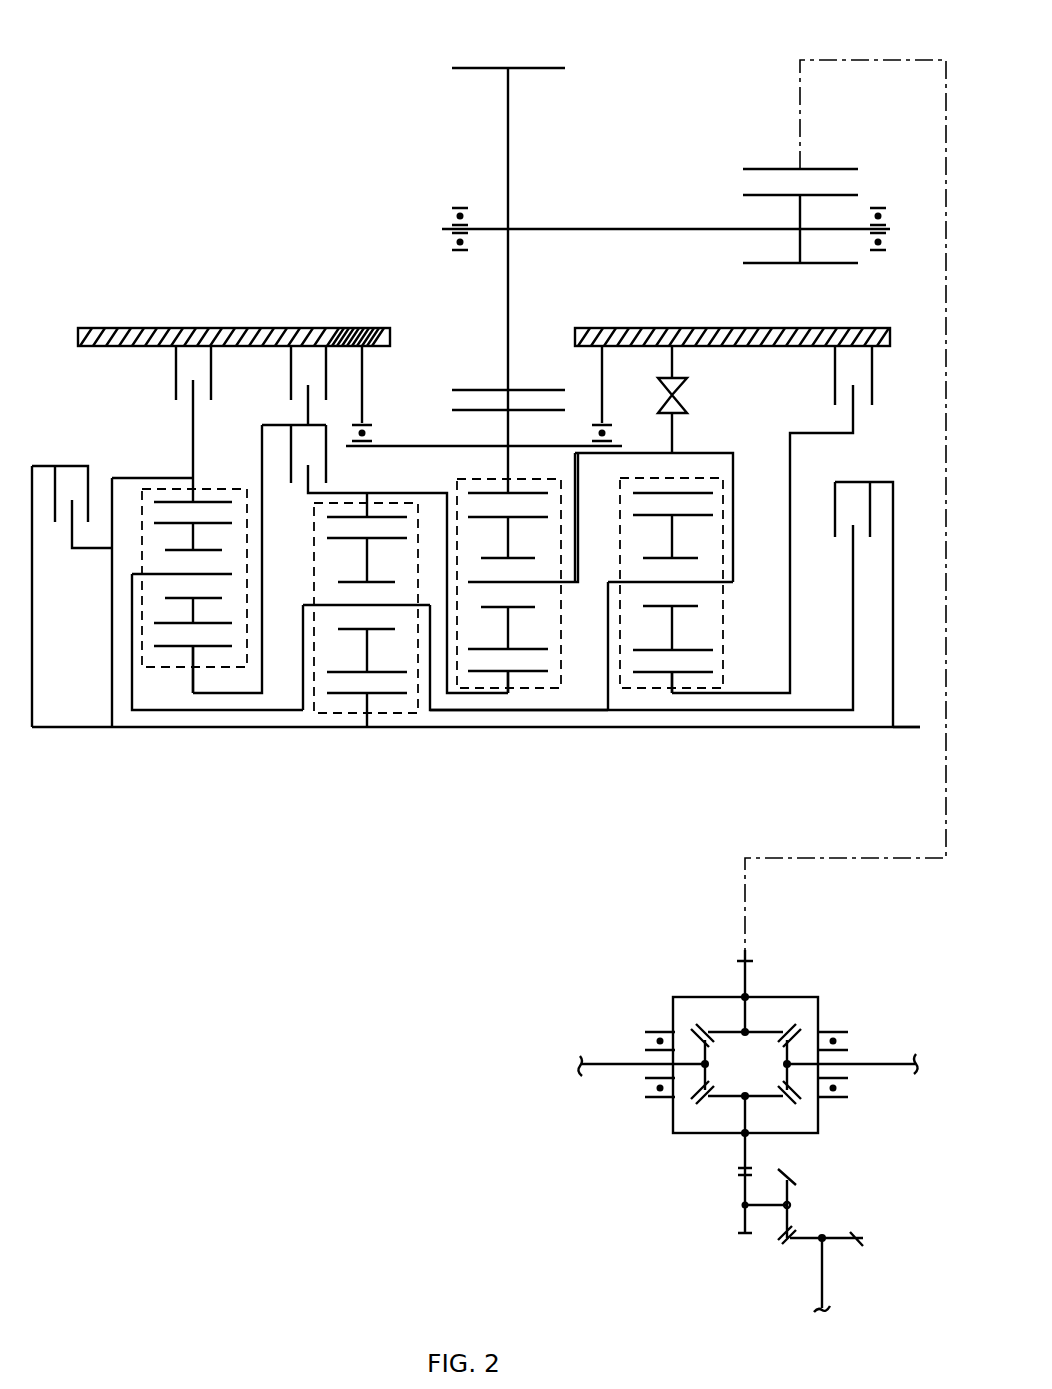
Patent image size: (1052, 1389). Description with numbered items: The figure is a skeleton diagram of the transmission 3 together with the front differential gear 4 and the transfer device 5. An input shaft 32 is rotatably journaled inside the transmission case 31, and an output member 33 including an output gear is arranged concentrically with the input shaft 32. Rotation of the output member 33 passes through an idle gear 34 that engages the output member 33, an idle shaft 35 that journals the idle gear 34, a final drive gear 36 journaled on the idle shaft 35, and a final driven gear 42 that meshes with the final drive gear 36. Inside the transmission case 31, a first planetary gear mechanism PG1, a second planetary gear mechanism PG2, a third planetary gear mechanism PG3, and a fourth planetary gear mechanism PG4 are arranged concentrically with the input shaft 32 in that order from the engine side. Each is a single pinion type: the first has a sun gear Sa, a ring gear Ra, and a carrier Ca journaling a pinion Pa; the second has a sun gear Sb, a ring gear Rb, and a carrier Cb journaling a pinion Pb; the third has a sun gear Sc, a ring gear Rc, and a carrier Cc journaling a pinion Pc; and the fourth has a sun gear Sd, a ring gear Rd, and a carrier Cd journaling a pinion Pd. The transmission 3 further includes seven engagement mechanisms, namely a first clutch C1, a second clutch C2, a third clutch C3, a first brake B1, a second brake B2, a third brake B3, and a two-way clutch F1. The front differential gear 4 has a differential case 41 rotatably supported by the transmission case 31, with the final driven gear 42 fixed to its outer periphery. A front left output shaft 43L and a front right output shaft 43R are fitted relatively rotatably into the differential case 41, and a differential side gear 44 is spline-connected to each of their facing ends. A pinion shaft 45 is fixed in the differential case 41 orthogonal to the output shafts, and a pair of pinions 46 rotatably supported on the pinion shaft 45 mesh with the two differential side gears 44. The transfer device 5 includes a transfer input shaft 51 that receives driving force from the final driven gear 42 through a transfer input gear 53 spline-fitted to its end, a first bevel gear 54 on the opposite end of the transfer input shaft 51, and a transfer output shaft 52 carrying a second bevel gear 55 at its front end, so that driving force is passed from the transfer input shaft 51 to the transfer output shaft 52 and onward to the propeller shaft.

The transmission 3 is at (266, 201).
The transmission case 31 is at (154, 328).
The input shaft 32 is at (914, 717).
The output member 33 is at (559, 410).
The idle gear 34 is at (481, 68).
The idle shaft 35 is at (633, 229).
The final drive gear 36 is at (755, 193).
The final driven gear 42 is at (830, 170).
The front differential gear 4 is at (876, 1008).
The differential case 41 is at (801, 997).
The front left output shaft 43L is at (604, 1068).
The front right output shaft 43R is at (850, 1068).
The differential side gear 44 is at (688, 1028).
The pinion shaft 45 is at (748, 1017).
The pinion 46 is at (702, 1021).
The transfer device 5 is at (862, 1189).
The transfer input shaft 51 is at (768, 1210).
The transfer output shaft 52 is at (826, 1268).
The transfer input gear 53 is at (750, 1236).
The first bevel gear 54 is at (796, 1182).
The second bevel gear 55 is at (852, 1237).
The first brake B1 is at (772, 519).
The second brake B2 is at (260, 519).
The third brake B3 is at (194, 424).
The first clutch C1 is at (661, 604).
The second clutch C2 is at (399, 559).
The third clutch C3 is at (112, 596).
The two-way clutch F1 is at (686, 396).
The first planetary gear mechanism PG1 is at (664, 700).
The second planetary gear mechanism PG2 is at (486, 700).
The third planetary gear mechanism PG3 is at (340, 712).
The fourth planetary gear mechanism PG4 is at (204, 492).
The ring gear Ra is at (688, 493).
The ring gear Rb is at (526, 492).
The ring gear Rc is at (344, 517).
The ring gear Rd is at (218, 502).
The carrier Ca is at (720, 585).
The carrier Cb is at (538, 582).
The carrier Cc is at (402, 605).
The carrier Cd is at (172, 574).
The pinion Pa is at (702, 650).
The pinion Pb is at (540, 650).
The pinion Pc is at (382, 672).
The pinion Pd is at (172, 623).
The sun gear Sa is at (690, 672).
The sun gear Sb is at (530, 672).
The sun gear Sc is at (395, 694).
The sun gear Sd is at (172, 648).